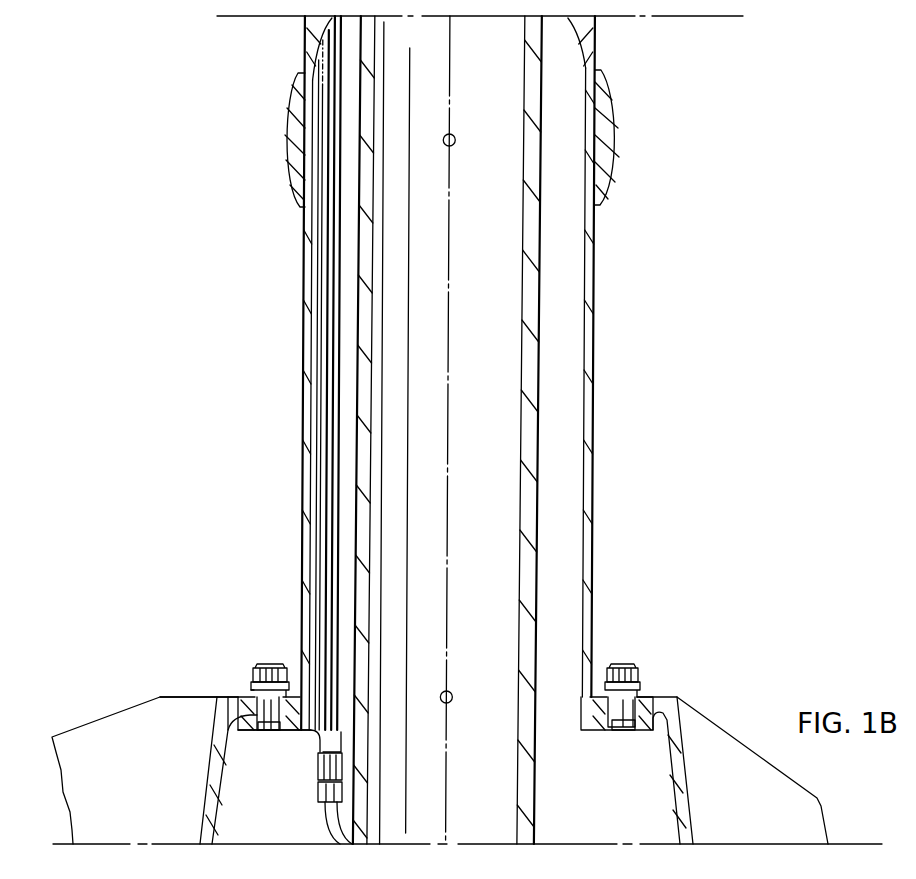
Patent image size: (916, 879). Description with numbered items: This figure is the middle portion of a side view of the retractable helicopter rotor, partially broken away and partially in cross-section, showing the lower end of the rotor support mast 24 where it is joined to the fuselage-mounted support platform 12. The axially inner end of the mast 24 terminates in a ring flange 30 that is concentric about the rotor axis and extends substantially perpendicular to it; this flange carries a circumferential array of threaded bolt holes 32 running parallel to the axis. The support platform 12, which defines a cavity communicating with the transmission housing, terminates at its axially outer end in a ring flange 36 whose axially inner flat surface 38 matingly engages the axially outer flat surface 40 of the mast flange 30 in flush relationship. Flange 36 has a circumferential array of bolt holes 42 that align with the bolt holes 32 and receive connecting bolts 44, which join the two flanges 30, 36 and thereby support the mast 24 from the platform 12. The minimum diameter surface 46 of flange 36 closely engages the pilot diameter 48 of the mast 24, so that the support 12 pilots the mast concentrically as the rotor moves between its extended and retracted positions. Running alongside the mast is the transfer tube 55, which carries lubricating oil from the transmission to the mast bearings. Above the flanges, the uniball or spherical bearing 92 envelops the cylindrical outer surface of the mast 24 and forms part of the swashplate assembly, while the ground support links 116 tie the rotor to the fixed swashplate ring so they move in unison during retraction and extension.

The support platform 12 is at (733, 745).
The mast 24 is at (592, 368).
The ring flange 30 is at (640, 732).
The threaded bolt holes 32 is at (623, 732).
The ring flange 36 is at (227, 696).
The axially inner flat surface 38 is at (250, 731).
The axially outer flat surface 40 is at (250, 696).
The bolt holes 42 is at (638, 698).
The connecting bolts 44 is at (620, 667).
The minimum diameter surface 46 is at (587, 703).
The pilot diameter 48 is at (590, 610).
The transfer tube 55 is at (327, 346).
The uniball or spherical bearing 92 is at (618, 124).
The ground support links 116 is at (237, 734).